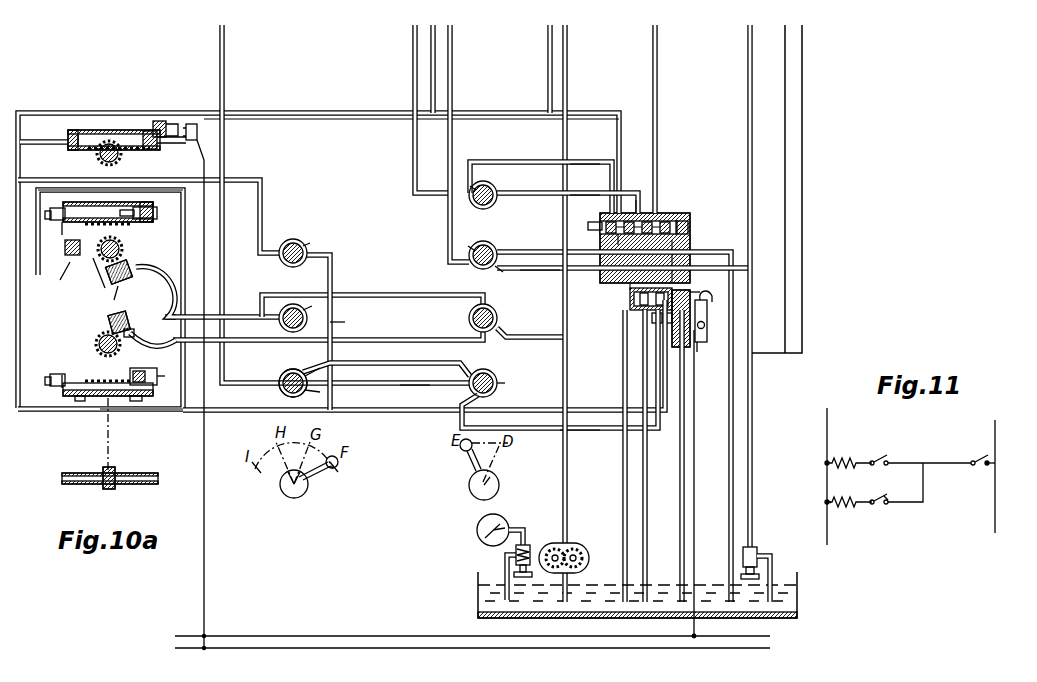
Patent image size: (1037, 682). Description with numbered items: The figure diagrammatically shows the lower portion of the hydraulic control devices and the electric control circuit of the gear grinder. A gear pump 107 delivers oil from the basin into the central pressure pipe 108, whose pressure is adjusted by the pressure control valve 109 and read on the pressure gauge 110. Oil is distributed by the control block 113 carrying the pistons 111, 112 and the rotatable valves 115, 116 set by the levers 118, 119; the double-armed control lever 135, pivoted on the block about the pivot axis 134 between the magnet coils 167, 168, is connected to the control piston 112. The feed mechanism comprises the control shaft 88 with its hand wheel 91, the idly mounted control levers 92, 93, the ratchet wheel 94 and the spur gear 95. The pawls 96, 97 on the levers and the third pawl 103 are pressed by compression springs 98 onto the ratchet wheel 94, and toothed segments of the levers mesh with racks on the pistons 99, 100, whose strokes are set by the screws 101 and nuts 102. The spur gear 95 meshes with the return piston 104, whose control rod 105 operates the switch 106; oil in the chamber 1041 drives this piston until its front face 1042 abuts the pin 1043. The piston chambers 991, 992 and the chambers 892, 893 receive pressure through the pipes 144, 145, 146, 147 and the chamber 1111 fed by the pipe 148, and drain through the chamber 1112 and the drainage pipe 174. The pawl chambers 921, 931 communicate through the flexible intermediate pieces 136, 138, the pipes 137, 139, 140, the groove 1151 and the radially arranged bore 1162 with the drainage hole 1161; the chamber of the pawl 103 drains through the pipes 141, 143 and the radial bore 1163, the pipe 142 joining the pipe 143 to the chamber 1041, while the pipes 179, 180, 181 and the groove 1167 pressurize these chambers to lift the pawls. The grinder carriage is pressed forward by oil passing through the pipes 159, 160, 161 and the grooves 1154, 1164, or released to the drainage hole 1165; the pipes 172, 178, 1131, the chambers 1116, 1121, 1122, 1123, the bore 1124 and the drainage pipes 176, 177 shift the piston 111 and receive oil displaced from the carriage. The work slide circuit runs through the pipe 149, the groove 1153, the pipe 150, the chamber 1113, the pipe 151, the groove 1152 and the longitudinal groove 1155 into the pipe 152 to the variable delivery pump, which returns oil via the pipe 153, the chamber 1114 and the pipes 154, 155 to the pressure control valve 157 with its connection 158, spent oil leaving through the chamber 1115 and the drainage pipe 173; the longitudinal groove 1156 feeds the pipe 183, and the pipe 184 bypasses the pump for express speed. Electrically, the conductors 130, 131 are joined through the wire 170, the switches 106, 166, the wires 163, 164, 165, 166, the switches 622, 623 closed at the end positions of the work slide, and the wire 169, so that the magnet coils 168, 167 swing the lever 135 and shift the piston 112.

In FIG. 10A, the control shaft 88 is at (108, 280).
In FIG. 10A, the hand wheel 91 is at (158, 477).
In FIG. 10A, the control lever 92 is at (146, 368).
In FIG. 10A, the control lever 93 is at (119, 247).
In FIG. 10A, the ratchet wheel 94 is at (130, 236).
In FIG. 10A, the spur gear 95 is at (100, 158).
In FIG. 10A, the pawl 96 is at (128, 332).
In FIG. 10A, the pawl 97 is at (104, 292).
In FIG. 10A, the compression springs 98 is at (99, 286).
In FIG. 10A, the piston 99 is at (118, 396).
In FIG. 10A, the piston 100 is at (153, 210).
In FIG. 10A, the screws 101 is at (62, 230).
In FIG. 10A, the nuts 102 is at (55, 210).
In FIG. 10A, the third pawl 103 is at (68, 246).
In FIG. 10A, the return piston 104 is at (92, 130).
In FIG. 10A, the control rod 105 is at (197, 138).
In FIG. 10A, the switch 106 is at (176, 121).
In FIG. 11, the switch 106 is at (980, 450).
In FIG. 10A, the gear pump 107 is at (575, 543).
In FIG. 10A, the central pressure pipe 108 is at (567, 56).
In FIG. 10A, the pressure control valve 109 is at (524, 545).
In FIG. 10A, the pressure gauge 110 is at (497, 516).
In FIG. 10A, the piston 111 is at (620, 240).
In FIG. 10A, the control piston 112 is at (690, 292).
In FIG. 10A, the control block 113 is at (690, 237).
In FIG. 10A, the valve 115 is at (516, 383).
In FIG. 10A, the valve 116 is at (333, 364).
In FIG. 10A, the lever 118 is at (465, 452).
In FIG. 10A, the lever 119 is at (337, 470).
In FIG. 10A, the conductor 130 is at (488, 636).
In FIG. 11, the conductor 130 is at (827, 430).
In FIG. 10A, the conductor 131 is at (488, 653).
In FIG. 11, the conductor 131 is at (993, 522).
In FIG. 10A, the pivot axis 134 is at (705, 327).
In FIG. 10A, the control lever 135 is at (708, 320).
In FIG. 10A, the flexible intermediate piece 136 is at (173, 375).
In FIG. 10A, the pipe 137 is at (238, 320).
In FIG. 10A, the flexible intermediate piece 138 is at (168, 280).
In FIG. 10A, the pipe 139 is at (413, 342).
In FIG. 10A, the pipe 140 is at (407, 295).
In FIG. 10A, the pipe 141 is at (38, 275).
In FIG. 10A, the pipe 142 is at (38, 173).
In FIG. 10A, the pipe 143 is at (134, 177).
In FIG. 10A, the pipe 144 is at (165, 414).
In FIG. 10A, the pipe 145 is at (180, 172).
In FIG. 10A, the pipe 146 is at (262, 103).
In FIG. 10A, the pipe 147 is at (60, 190).
In FIG. 10A, the pipe 148 is at (583, 162).
In FIG. 10A, the pipe 149 is at (518, 162).
In FIG. 10A, the pipe 150 is at (585, 188).
In FIG. 10A, the pipe 151 is at (540, 272).
In FIG. 10A, the pipe 152 is at (412, 50).
In FIG. 10A, the pipe 153 is at (658, 60).
In FIG. 10A, the pipe 154 is at (695, 266).
In FIG. 10A, the pipe 155 is at (748, 100).
In FIG. 10A, the pressure control valve 157 is at (752, 547).
In FIG. 10A, the drain pipe 158 is at (771, 562).
In FIG. 10A, the pipe 159 is at (480, 402).
In FIG. 10A, the pipe 160 is at (408, 383).
In FIG. 10A, the pipe 161 is at (224, 362).
In FIG. 10A, the wire 163 is at (272, 121).
In FIG. 11, the wire 163 is at (927, 466).
In FIG. 11, the wire 164 is at (906, 462).
In FIG. 10A, the wire 165 is at (804, 100).
In FIG. 11, the wire 165 is at (885, 512).
In FIG. 10A, the switch 166 is at (785, 70).
In FIG. 11, the switch 166 is at (872, 460).
In FIG. 10A, the magnet coil 167 is at (712, 302).
In FIG. 11, the magnet coil 167 is at (849, 452).
In FIG. 10A, the magnet coil 168 is at (697, 352).
In FIG. 11, the magnet coil 168 is at (849, 513).
In FIG. 10A, the wire 169 is at (695, 412).
In FIG. 11, the wire 169 is at (829, 500).
In FIG. 10A, the wire 170 is at (206, 528).
In FIG. 11, the wire 170 is at (988, 466).
In FIG. 10A, the pipe 172 is at (585, 408).
In FIG. 10A, the drainage pipe 173 is at (525, 254).
In FIG. 10A, the drainage pipe 174 is at (623, 490).
In FIG. 10A, the pipe 176 is at (681, 508).
In FIG. 10A, the drainage pipe 177 is at (647, 472).
In FIG. 10A, the pipe 178 is at (575, 432).
In FIG. 10A, the pipe 179 is at (345, 365).
In FIG. 10A, the pipe 180 is at (361, 317).
In FIG. 10A, the pipe 181 is at (513, 337).
In FIG. 10A, the pipe 183 is at (453, 137).
In FIG. 10A, the pipe 184 is at (440, 45).
In FIG. 11, the switch 622 is at (905, 482).
In FIG. 11, the switch 623 is at (885, 498).
In FIG. 10A, the chamber 892 is at (148, 222).
In FIG. 10A, the chamber 893 is at (98, 210).
In FIG. 10A, the chamber 921 is at (108, 320).
In FIG. 10A, the chamber 931 is at (128, 272).
In FIG. 10A, the piston chamber 991 is at (137, 401).
In FIG. 10A, the piston chamber 992 is at (80, 401).
In FIG. 10A, the chamber 1041 is at (70, 131).
In FIG. 10A, the front face 1042 is at (150, 130).
In FIG. 10A, the pin 1043 is at (150, 128).
In FIG. 10A, the chamber 1111 is at (596, 222).
In FIG. 10A, the chamber 1112 is at (636, 205).
In FIG. 10A, the chamber 1113 is at (632, 285).
In FIG. 10A, the chamber 1114 is at (648, 221).
In FIG. 10A, the chamber 1115 is at (655, 221).
In FIG. 10A, the chamber 1116 is at (690, 222).
In FIG. 10A, the large chamber 1121 is at (652, 318).
In FIG. 10A, the chamber 1122 is at (664, 322).
In FIG. 10A, the chamber 1123 is at (700, 292).
In FIG. 10A, the bore 1124 is at (632, 300).
In FIG. 10A, the pipe 1131 is at (690, 252).
In FIG. 10A, the groove 1151 is at (470, 325).
In FIG. 10A, the groove 1152 is at (497, 270).
In FIG. 10A, the groove 1153 is at (522, 192).
In FIG. 10A, the groove 1154 is at (485, 369).
In FIG. 10A, the longitudinal groove 1155 is at (476, 210).
In FIG. 10A, the longitudinal groove 1156 is at (474, 186).
In FIG. 10A, the drainage hole 1161 is at (333, 398).
In FIG. 10A, the radially arranged bore 1162 is at (283, 326).
In FIG. 10A, the radial bore 1163 is at (280, 262).
In FIG. 10A, the groove 1164 is at (282, 390).
In FIG. 10A, the drainage hole 1165 is at (293, 369).
In FIG. 10A, the groove 1167 is at (312, 262).